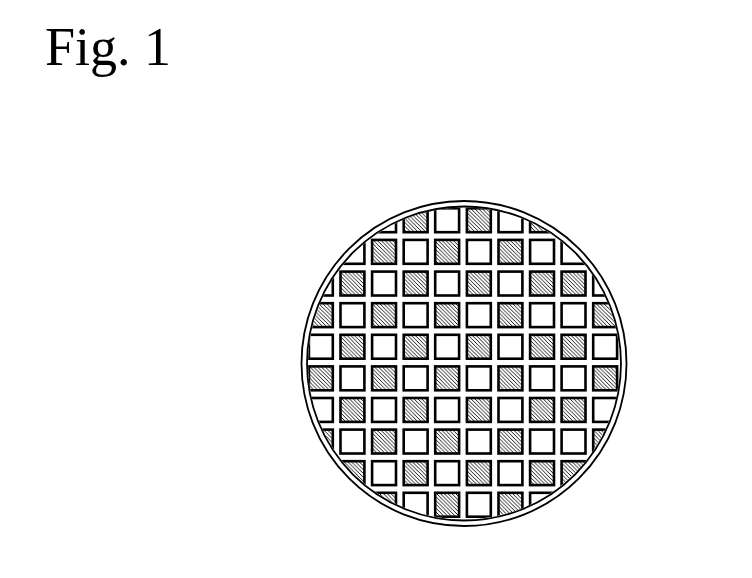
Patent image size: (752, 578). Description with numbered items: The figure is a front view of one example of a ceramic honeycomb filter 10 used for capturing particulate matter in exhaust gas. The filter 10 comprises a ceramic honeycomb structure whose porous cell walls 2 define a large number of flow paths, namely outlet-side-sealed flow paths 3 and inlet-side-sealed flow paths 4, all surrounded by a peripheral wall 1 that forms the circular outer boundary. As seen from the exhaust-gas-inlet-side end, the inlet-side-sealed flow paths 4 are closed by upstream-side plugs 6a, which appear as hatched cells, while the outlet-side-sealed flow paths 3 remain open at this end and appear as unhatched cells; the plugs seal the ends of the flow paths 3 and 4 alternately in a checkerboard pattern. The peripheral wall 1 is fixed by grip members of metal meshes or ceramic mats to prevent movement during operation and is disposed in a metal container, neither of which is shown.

The ceramic honeycomb filter 10 is at (301, 185).
The peripheral wall 1 is at (378, 224).
The porous cell walls 2 is at (445, 237).
The upstream-side plugs 6a is at (509, 254).
The inlet-side-sealed flow paths 4 is at (518, 257).
The outlet-side-sealed flow paths 3 is at (515, 285).